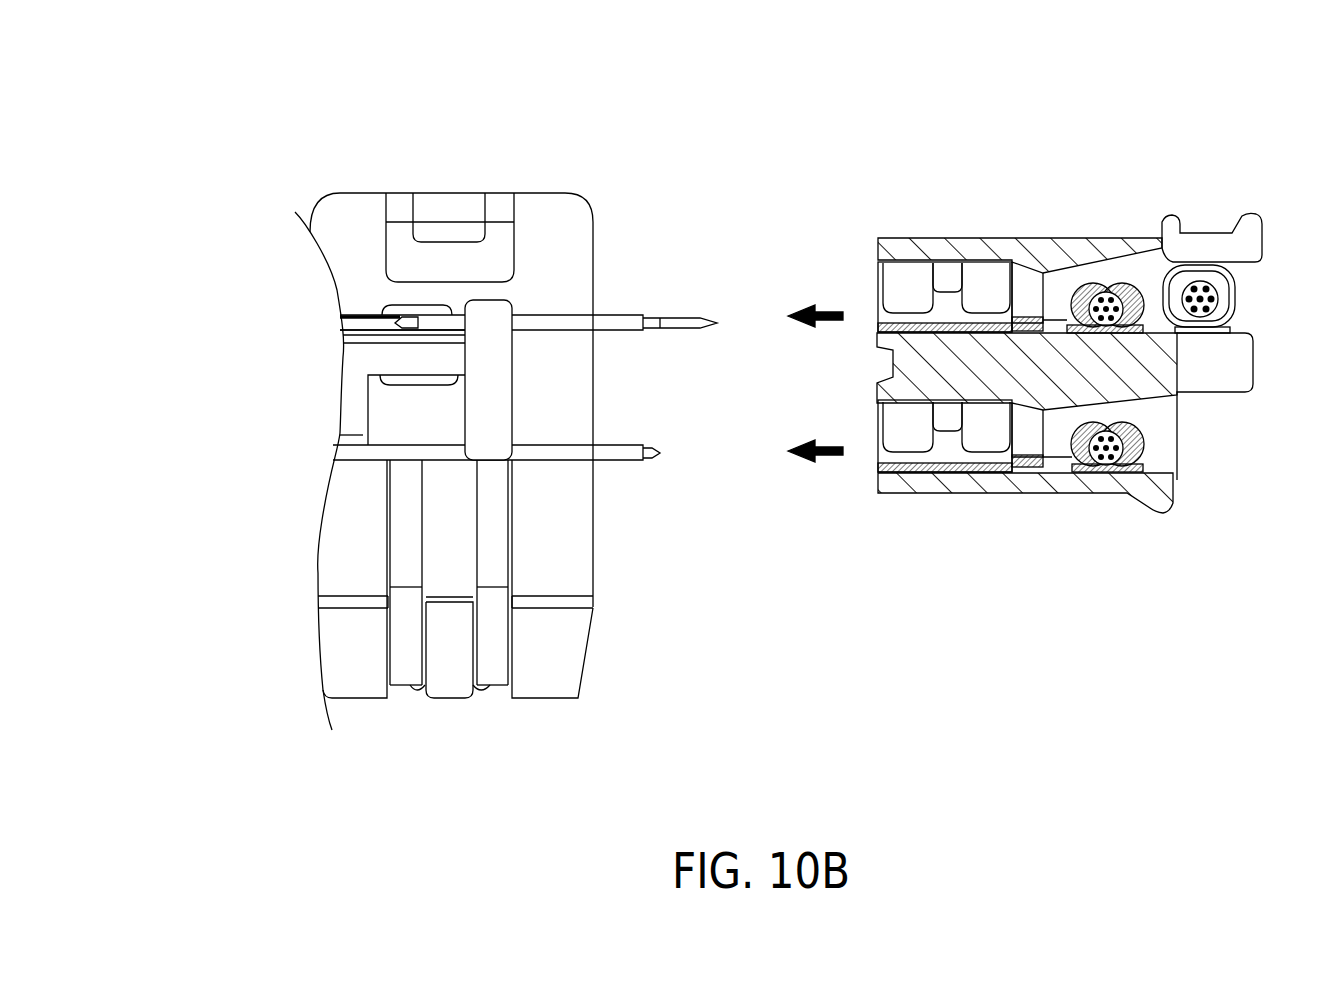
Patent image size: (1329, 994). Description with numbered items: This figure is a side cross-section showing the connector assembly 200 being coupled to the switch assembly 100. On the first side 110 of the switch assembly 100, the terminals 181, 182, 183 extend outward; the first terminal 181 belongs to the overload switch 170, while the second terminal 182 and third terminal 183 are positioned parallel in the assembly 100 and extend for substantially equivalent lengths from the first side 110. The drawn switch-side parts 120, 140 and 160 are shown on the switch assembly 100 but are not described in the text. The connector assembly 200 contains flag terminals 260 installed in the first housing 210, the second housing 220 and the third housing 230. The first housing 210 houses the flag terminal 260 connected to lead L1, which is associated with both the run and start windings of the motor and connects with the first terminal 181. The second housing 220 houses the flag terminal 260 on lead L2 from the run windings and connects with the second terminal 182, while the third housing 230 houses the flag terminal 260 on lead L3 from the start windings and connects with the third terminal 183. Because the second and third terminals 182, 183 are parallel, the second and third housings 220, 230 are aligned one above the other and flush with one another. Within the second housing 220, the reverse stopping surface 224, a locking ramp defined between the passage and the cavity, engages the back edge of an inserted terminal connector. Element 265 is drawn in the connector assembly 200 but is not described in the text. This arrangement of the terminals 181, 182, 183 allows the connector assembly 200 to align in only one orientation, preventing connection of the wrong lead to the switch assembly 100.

The switch assembly 100 is at (185, 158).
The first side 110 is at (694, 602).
The upper housing portion 120 is at (335, 193).
The contact 140 is at (347, 315).
The partition block 160 is at (358, 462).
The overload switch 170 is at (412, 667).
The first terminal 181 is at (697, 315).
The second terminal 182 is at (620, 315).
The third terminal 183 is at (620, 462).
The connector assembly 200 is at (1108, 110).
The first housing 210 is at (1215, 231).
The second housing 220 is at (922, 234).
The reverse stopping surface 224 is at (1015, 270).
The third housing 230 is at (960, 494).
The flag terminal 260 is at (896, 290).
The contact cavity 265 is at (1000, 283).
The lead L1 is at (1223, 296).
The lead L2 is at (1095, 300).
The lead L3 is at (1147, 444).